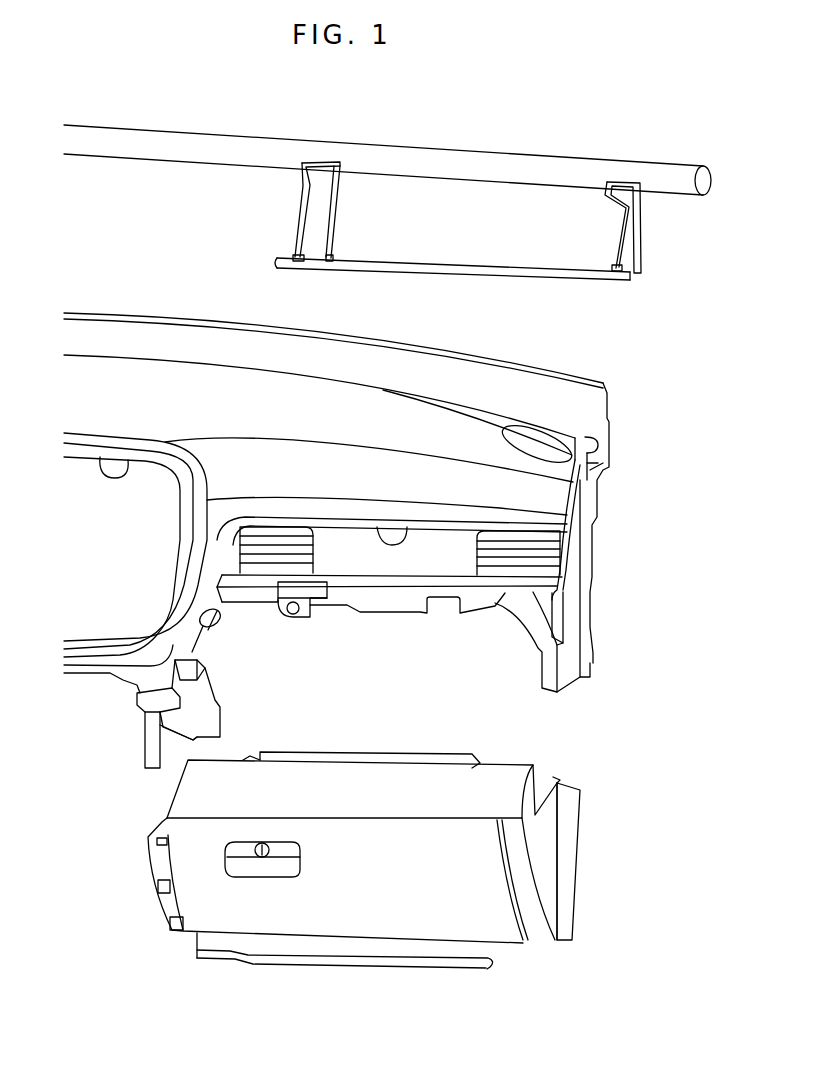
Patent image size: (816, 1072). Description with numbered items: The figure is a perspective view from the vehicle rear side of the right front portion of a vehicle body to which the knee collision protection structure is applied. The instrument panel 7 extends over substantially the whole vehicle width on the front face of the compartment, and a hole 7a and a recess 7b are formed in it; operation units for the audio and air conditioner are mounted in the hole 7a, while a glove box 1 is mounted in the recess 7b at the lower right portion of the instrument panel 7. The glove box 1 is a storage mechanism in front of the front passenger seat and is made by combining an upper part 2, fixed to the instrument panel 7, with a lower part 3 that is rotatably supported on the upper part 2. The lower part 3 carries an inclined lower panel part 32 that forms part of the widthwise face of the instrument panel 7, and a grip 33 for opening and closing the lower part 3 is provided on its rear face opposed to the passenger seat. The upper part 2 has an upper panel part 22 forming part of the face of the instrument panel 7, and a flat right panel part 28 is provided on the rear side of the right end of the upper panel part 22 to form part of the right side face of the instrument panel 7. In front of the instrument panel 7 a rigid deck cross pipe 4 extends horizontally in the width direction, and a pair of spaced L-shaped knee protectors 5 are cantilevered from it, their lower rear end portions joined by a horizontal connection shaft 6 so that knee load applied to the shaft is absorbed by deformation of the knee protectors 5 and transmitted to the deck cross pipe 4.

The glove box 1 is at (397, 852).
The upper part 2 is at (499, 762).
The lower part 3 is at (511, 948).
The deck cross pipe 4 is at (203, 146).
The knee protector 5 is at (313, 216).
The connection shaft 6 is at (444, 263).
The instrument panel 7 is at (385, 540).
The hole 7a is at (103, 460).
The recess 7b is at (379, 530).
The upper panel part 22 is at (192, 802).
The right panel part 28 is at (545, 847).
The lower panel part 32 is at (212, 912).
The grip 33 is at (267, 865).